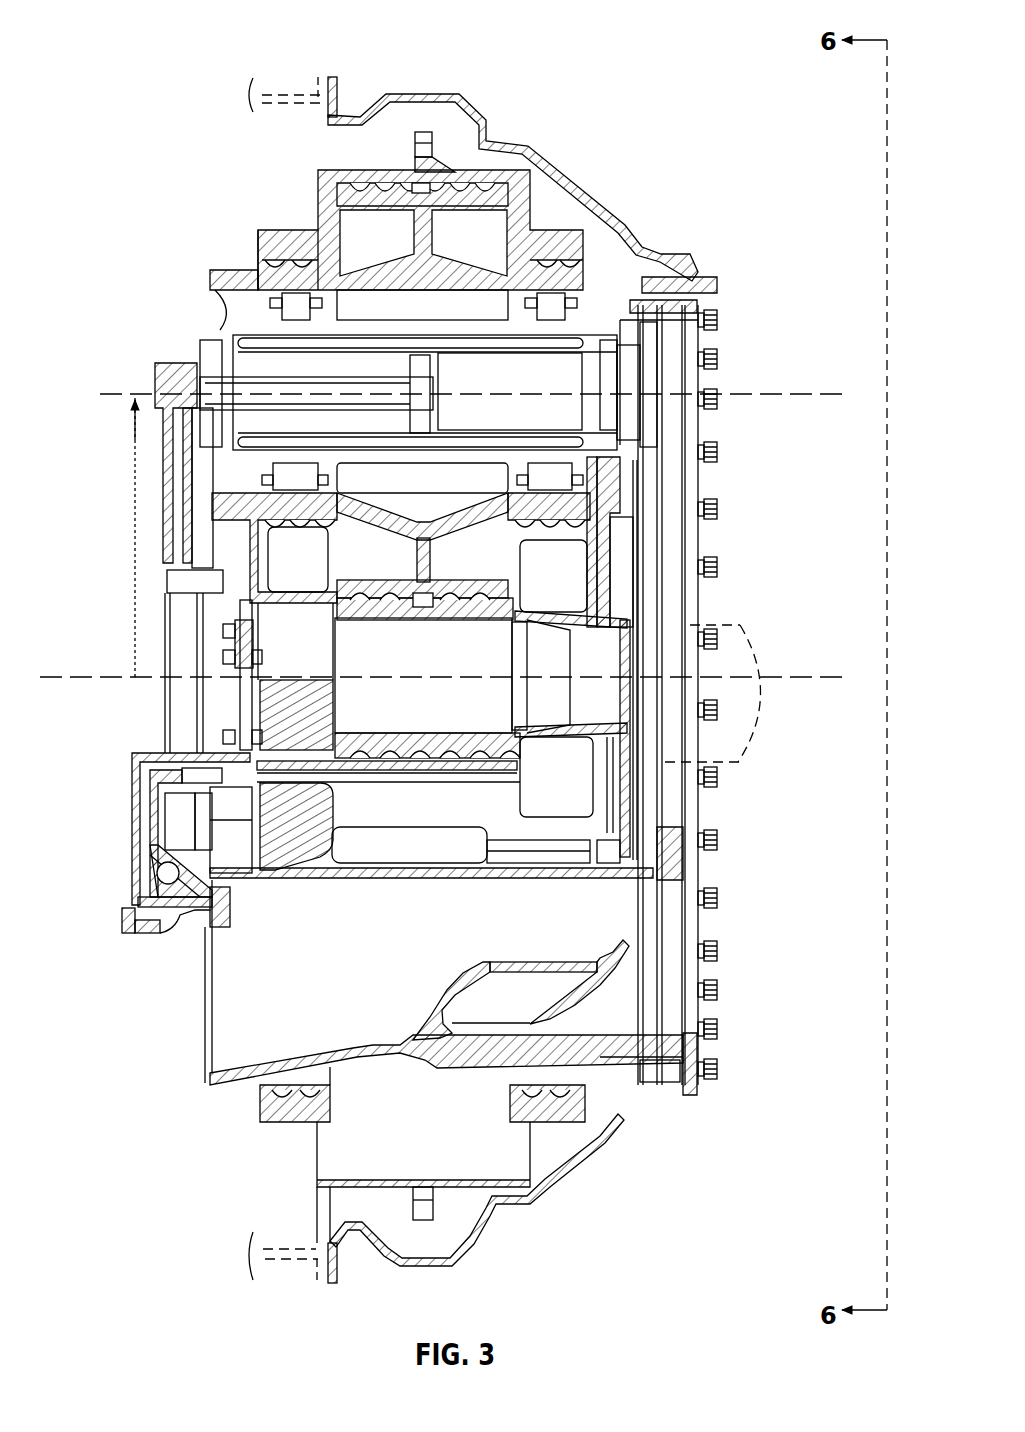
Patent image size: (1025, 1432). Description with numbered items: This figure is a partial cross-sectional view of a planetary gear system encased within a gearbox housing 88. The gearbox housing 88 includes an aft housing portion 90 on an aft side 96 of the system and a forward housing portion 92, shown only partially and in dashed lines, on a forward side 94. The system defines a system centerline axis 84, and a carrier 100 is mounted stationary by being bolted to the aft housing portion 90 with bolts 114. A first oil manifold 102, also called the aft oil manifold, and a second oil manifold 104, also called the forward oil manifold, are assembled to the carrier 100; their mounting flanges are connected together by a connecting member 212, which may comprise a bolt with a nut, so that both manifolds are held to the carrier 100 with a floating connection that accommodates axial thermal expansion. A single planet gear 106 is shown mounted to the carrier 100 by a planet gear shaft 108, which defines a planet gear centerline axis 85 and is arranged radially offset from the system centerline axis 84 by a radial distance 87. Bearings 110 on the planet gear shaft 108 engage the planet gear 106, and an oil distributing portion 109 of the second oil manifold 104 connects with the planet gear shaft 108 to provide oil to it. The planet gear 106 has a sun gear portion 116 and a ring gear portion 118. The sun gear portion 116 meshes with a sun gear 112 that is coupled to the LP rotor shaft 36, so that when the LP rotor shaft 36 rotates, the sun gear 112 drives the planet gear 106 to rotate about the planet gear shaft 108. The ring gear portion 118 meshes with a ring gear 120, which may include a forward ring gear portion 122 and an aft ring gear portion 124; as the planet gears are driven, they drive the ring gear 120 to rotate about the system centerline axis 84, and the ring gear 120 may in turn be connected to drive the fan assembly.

The forward housing portion 92 is at (268, 95).
The sun gear portion 116 is at (374, 194).
The gearbox housing 88 is at (480, 105).
The aft ring gear portion 124 is at (520, 187).
The aft housing portion 90 is at (533, 230).
The forward ring gear portion 122 is at (316, 228).
The ring gear 120 is at (275, 256).
The ring gear portion 118 is at (275, 270).
The planet gear 106 is at (648, 277).
The bolts 114 is at (720, 284).
The bearings 110 is at (290, 300).
The planet gear shaft 108 is at (652, 395).
The oil distributing portion 109 is at (153, 384).
The planet gear centerline axis 85 is at (130, 399).
The second oil manifold 104 is at (156, 482).
The radial distance 87 is at (132, 515).
The connecting member 212 is at (217, 635).
The system centerline axis 84 is at (112, 674).
The forward side 94 is at (69, 673).
The aft side 96 is at (791, 673).
The LP rotor shaft 36 is at (742, 636).
The first oil manifold 102 is at (622, 513).
The sun gear 112 is at (437, 607).
The carrier 100 is at (628, 1048).